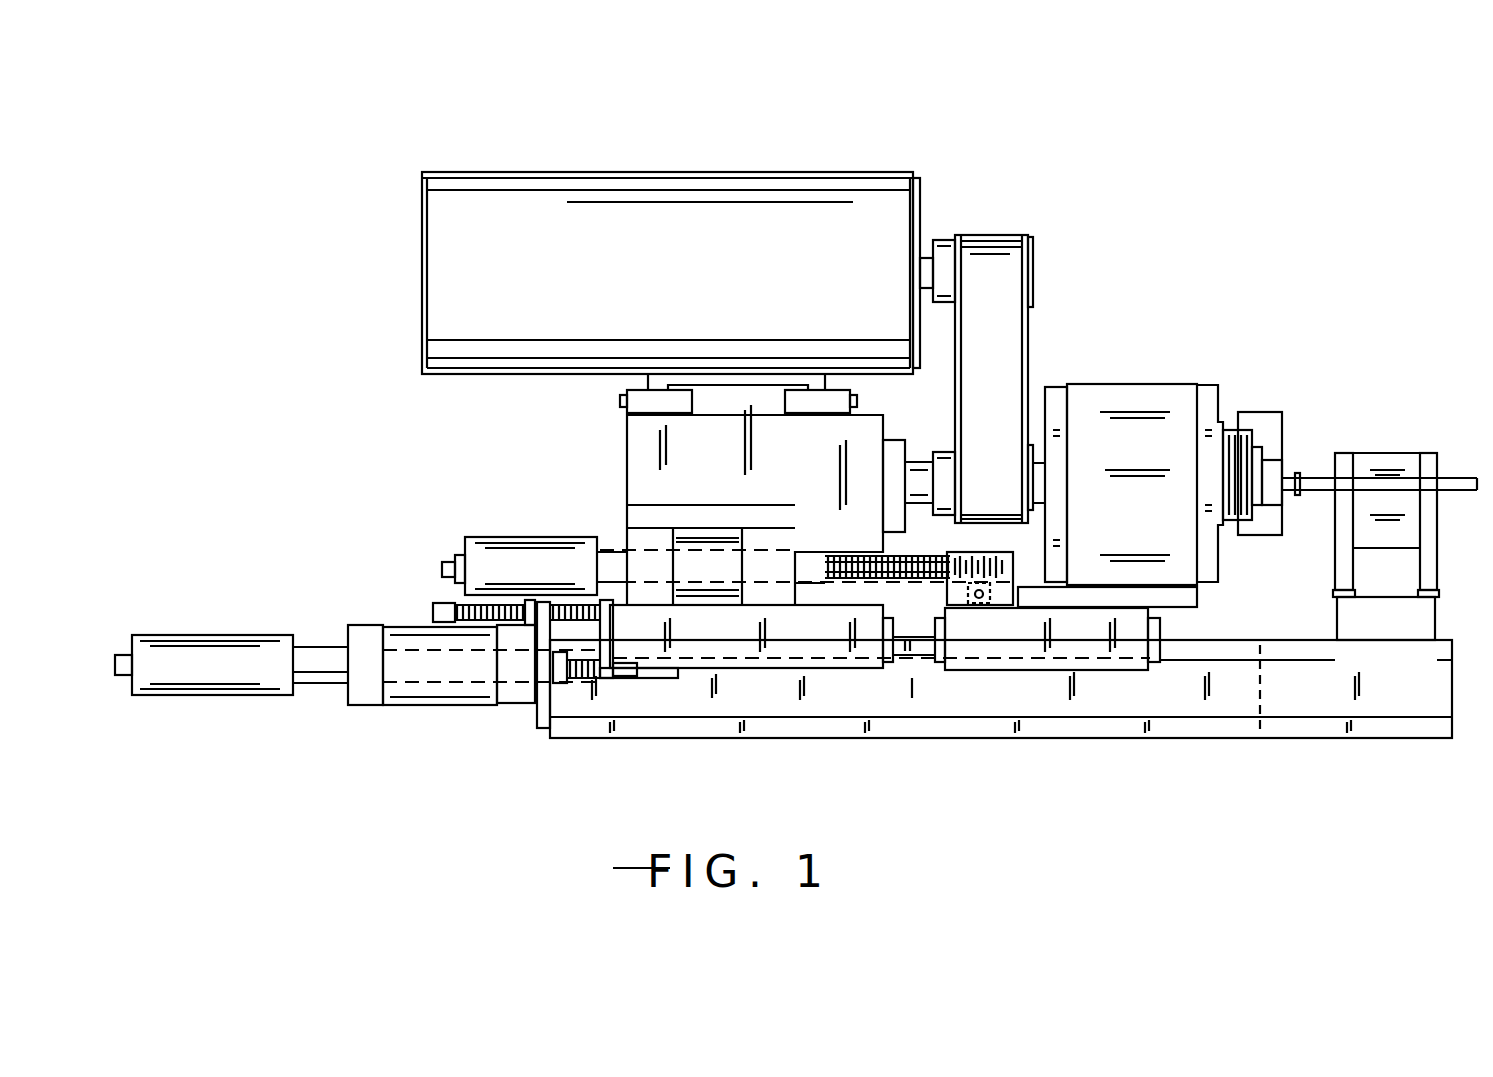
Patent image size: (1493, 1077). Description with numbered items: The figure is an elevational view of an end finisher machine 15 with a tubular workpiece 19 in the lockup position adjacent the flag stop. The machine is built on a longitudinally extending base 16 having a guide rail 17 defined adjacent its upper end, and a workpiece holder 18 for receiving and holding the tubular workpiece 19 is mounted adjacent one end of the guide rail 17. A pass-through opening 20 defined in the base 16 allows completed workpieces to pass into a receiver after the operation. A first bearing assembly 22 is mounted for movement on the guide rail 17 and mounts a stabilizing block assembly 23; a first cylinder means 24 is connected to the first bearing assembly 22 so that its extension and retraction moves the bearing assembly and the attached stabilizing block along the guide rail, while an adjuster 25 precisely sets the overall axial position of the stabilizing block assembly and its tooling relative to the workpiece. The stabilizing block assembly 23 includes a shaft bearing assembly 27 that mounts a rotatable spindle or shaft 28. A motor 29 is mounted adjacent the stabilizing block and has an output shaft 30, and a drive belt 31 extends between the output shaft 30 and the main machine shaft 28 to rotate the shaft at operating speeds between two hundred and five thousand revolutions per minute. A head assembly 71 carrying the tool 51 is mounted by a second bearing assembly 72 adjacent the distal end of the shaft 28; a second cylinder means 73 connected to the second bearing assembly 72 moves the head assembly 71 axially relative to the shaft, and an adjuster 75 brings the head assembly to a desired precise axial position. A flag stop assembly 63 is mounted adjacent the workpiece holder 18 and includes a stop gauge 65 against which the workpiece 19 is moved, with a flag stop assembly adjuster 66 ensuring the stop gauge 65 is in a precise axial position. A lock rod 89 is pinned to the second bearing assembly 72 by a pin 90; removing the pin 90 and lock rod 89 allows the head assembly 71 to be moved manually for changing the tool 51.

The end finisher machine 15 is at (796, 172).
The base 16 is at (1072, 740).
The guide rail 17 is at (1243, 640).
The workpiece holder 18 is at (1440, 459).
The tubular workpiece 19 is at (1320, 477).
The pass-through opening 20 is at (1262, 680).
The first bearing assembly 22 is at (778, 670).
The stabilizing block assembly 23 is at (627, 440).
The first cylinder means 24 is at (420, 700).
The adjuster 25 is at (210, 632).
The shaft bearing assembly 27 is at (883, 422).
The shaft 28 is at (919, 460).
The motor 29 is at (683, 286).
The output shaft 30 is at (926, 256).
The drive belt 31 is at (1028, 342).
The tool 51 is at (1250, 480).
The flag stop assembly 63 is at (1285, 467).
The stop gauge 65 is at (1277, 497).
The flag stop assembly adjuster 66 is at (442, 603).
The head assembly 71 is at (1166, 382).
The second bearing assembly 72 is at (1124, 672).
The second cylinder means 73 is at (703, 567).
The adjuster 75 is at (498, 535).
The lock rod 89 is at (905, 600).
The pin 90 is at (980, 600).